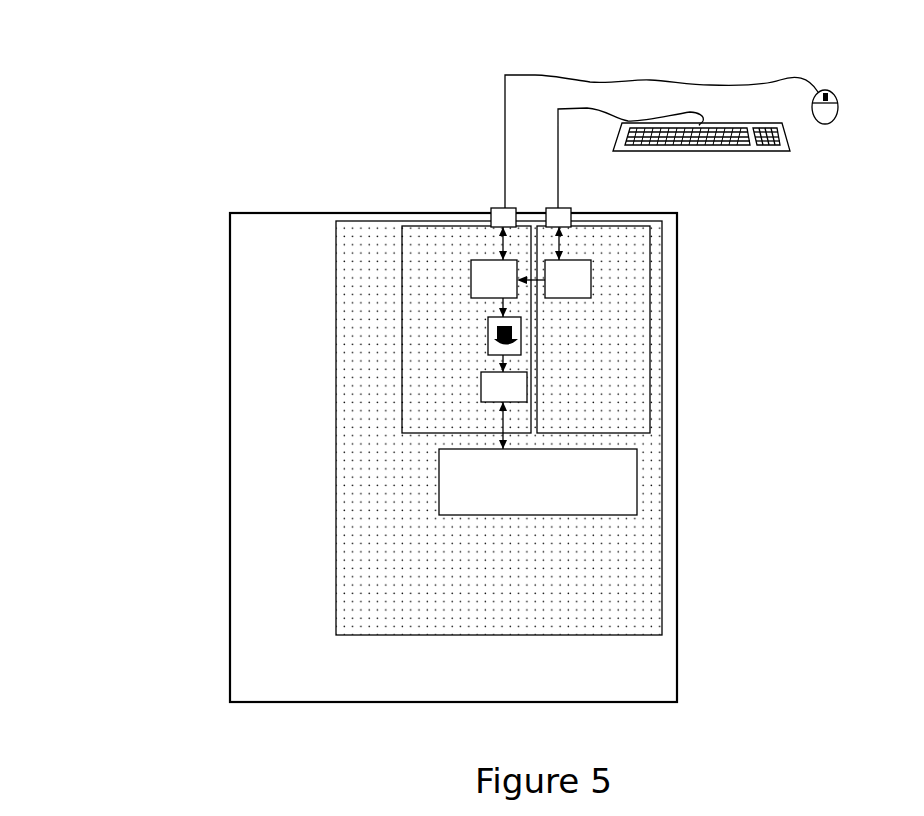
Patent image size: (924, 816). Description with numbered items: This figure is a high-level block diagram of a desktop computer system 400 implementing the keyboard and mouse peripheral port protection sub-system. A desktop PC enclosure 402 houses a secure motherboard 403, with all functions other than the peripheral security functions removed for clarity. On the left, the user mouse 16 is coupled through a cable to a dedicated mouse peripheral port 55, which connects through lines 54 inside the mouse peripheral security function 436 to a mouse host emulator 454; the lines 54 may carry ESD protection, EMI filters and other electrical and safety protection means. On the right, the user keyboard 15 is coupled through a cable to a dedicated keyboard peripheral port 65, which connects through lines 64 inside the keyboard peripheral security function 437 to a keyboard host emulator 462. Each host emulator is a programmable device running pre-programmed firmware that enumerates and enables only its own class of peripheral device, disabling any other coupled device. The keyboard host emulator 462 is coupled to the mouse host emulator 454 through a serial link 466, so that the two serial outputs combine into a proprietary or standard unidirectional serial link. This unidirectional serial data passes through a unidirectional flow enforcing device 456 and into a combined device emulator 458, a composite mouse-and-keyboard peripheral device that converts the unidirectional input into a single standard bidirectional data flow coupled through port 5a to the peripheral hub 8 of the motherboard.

The desktop computer system 400 is at (88, 54).
The desktop PC enclosure 402 is at (271, 213).
The secure motherboard 403 is at (336, 352).
The mouse peripheral security function 436 is at (402, 328).
The keyboard peripheral security function 437 is at (650, 328).
The dedicated mouse peripheral port 55 is at (491, 208).
The dedicated keyboard peripheral port 65 is at (571, 208).
The lines 54 is at (501, 243).
The lines 64 is at (563, 243).
The mouse host emulator 454 is at (471, 280).
The keyboard host emulator 462 is at (591, 280).
The serial link 466 is at (540, 280).
The unidirectional flow enforcing device 456 is at (488, 327).
The combined device emulator 458 is at (481, 380).
The port 5a is at (501, 420).
The peripheral hub 8 is at (439, 480).
The user keyboard 15 is at (621, 128).
The user mouse 16 is at (838, 113).